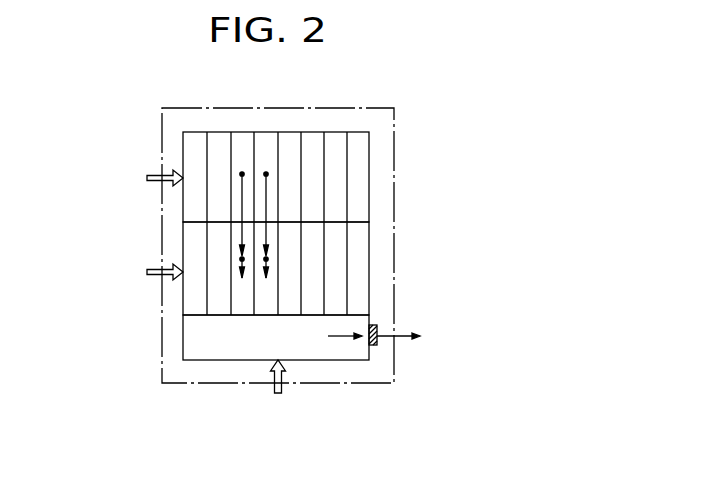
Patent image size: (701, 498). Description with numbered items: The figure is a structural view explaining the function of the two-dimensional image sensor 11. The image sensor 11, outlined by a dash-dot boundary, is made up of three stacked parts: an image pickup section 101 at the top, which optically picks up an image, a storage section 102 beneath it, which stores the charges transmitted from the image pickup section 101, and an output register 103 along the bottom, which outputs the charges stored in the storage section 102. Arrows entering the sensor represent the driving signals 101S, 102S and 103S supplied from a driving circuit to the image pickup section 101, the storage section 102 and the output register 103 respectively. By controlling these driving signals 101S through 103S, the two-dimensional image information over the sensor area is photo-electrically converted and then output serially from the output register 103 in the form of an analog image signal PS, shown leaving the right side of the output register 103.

The two-dimensional image sensor 11 is at (394, 176).
The image pickup section 101 is at (183, 145).
The storage section 102 is at (183, 300).
The output register 103 is at (340, 360).
The driving signal 101S is at (136, 176).
The driving signal 102S is at (133, 273).
The driving signal 103S is at (280, 391).
The analog image signal PS is at (413, 337).